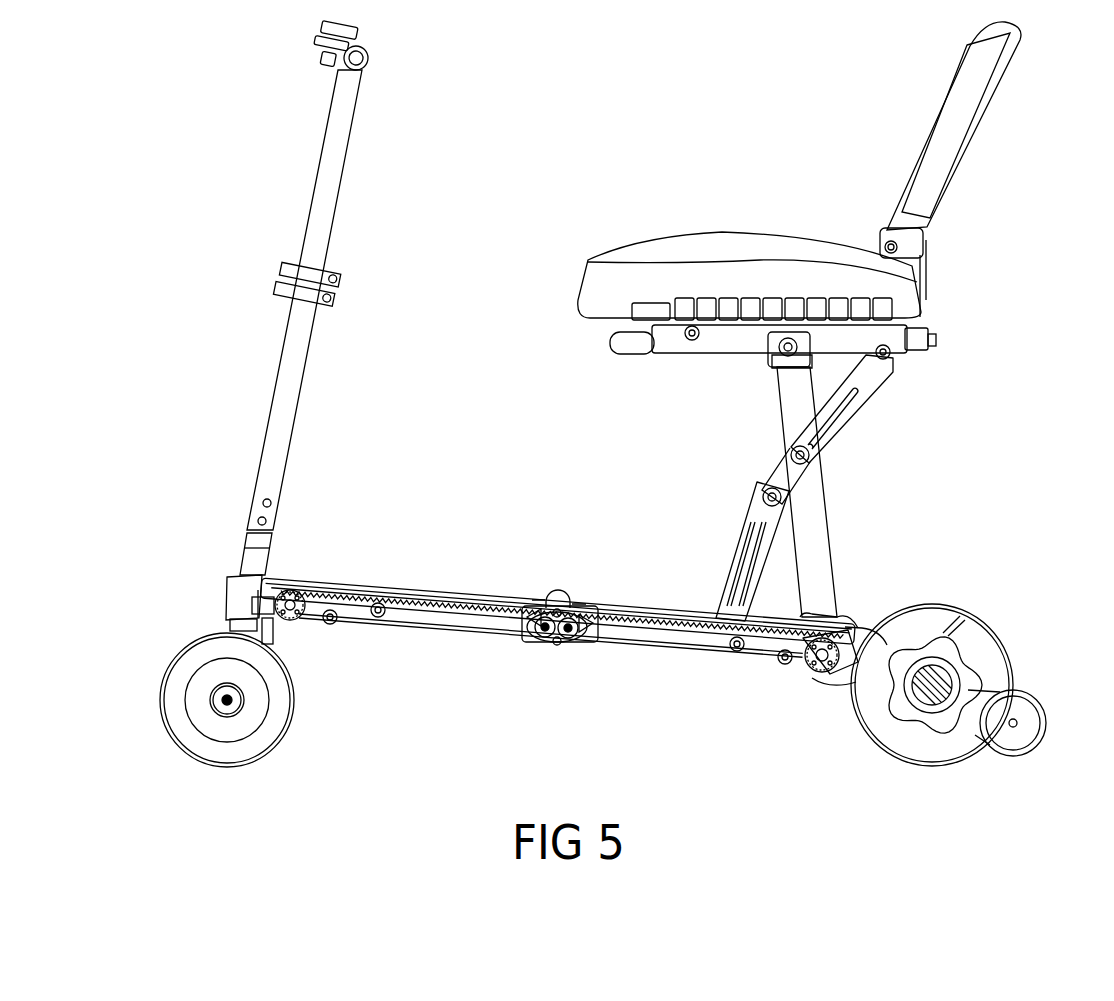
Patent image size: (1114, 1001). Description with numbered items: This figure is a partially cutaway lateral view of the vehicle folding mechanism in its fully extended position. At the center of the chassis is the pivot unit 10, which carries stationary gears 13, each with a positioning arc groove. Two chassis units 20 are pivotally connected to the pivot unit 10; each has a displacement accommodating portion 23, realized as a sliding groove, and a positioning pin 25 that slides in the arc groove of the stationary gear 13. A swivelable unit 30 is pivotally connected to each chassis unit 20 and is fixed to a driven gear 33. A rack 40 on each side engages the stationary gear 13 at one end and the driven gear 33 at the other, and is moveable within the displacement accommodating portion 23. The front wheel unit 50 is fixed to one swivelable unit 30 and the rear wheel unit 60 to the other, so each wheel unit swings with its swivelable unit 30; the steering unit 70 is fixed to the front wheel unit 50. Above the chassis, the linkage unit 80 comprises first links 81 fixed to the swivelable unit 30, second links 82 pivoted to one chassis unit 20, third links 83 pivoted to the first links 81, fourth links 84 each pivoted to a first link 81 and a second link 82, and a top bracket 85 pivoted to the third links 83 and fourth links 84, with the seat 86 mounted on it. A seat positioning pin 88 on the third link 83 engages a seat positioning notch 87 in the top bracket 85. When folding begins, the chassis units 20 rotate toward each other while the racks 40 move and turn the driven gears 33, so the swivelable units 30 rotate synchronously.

The pivot unit 10 is at (558, 578).
The stationary gear 13 is at (587, 644).
The chassis unit 20 is at (440, 640).
The displacement accommodating portion 23 is at (540, 600).
The positioning pin 25 is at (545, 640).
The swivelable unit 30 is at (208, 591).
The driven gear 33 is at (293, 622).
The rack 40 is at (411, 590).
The front wheel unit 50 is at (146, 714).
The rear wheel unit 60 is at (1017, 648).
The steering unit 70 is at (278, 324).
The linkage unit 80 is at (918, 490).
The first link 81 is at (822, 543).
The second link 82 is at (735, 547).
The third link 83 is at (712, 347).
The fourth link 84 is at (868, 415).
The top bracket 85 is at (932, 340).
The seat 86 is at (897, 145).
The seat positioning notch 87 is at (806, 355).
The seat positioning pin 88 is at (787, 358).